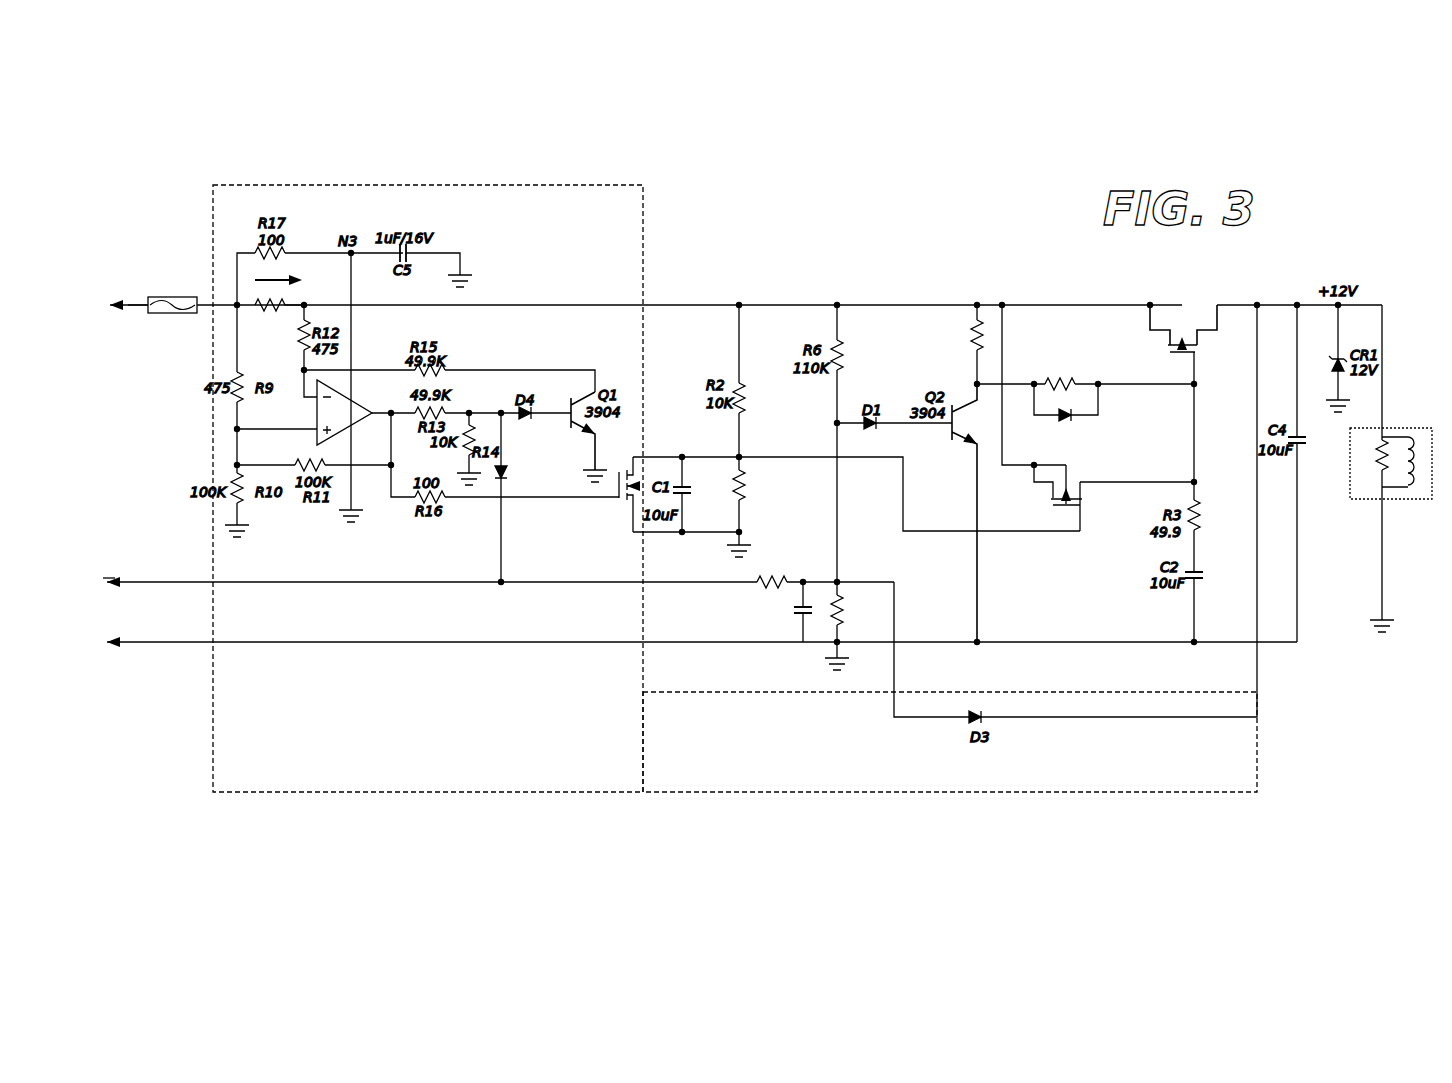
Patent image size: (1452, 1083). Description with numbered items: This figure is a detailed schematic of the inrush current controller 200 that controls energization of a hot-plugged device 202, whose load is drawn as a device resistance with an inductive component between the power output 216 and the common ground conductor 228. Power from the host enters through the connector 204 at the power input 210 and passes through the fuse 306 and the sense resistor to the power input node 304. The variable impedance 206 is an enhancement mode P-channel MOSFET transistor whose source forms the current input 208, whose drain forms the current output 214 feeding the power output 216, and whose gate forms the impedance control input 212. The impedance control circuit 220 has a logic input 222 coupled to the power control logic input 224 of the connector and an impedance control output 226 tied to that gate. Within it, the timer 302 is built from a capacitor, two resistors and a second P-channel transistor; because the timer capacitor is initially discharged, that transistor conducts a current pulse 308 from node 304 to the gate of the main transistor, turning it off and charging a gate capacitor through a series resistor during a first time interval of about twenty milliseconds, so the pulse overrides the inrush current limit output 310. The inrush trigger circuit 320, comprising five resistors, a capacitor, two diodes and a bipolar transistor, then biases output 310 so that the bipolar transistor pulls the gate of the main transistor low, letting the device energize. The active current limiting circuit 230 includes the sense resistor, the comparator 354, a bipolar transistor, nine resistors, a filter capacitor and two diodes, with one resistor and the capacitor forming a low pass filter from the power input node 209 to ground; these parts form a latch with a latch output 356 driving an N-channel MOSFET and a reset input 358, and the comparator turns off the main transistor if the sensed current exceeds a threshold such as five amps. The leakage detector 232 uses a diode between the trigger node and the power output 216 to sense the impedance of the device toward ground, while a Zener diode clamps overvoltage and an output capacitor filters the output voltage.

The inrush current controller 200 is at (932, 232).
The device 202 is at (1405, 428).
The connector 204 is at (185, 250).
The variable impedance 206 is at (1203, 292).
The current input 208 is at (1145, 305).
The power input node 209 is at (237, 308).
The power input 210 is at (140, 310).
The impedance control input 212 is at (1197, 346).
The current output 214 is at (1225, 305).
The power output 216 is at (1382, 305).
The impedance control circuit 220 is at (866, 280).
The logic input 222 is at (330, 583).
The power control logic input 224 is at (150, 584).
The impedance control output 226 is at (1150, 386).
The common ground conductor 228 is at (465, 272).
The active current limiting circuit 230 is at (644, 242).
The leakage detector 232 is at (286, 330).
The timer 302 is at (768, 488).
The power input node 304 is at (1000, 303).
The fuse 306 is at (175, 318).
The current pulse (timer output) 308 is at (1135, 487).
The inrush current limit output 310 is at (1160, 373).
The inrush trigger circuit 320 is at (785, 655).
The comparator 354 is at (372, 412).
The latch output 356 is at (575, 495).
The reset input 358 is at (500, 528).